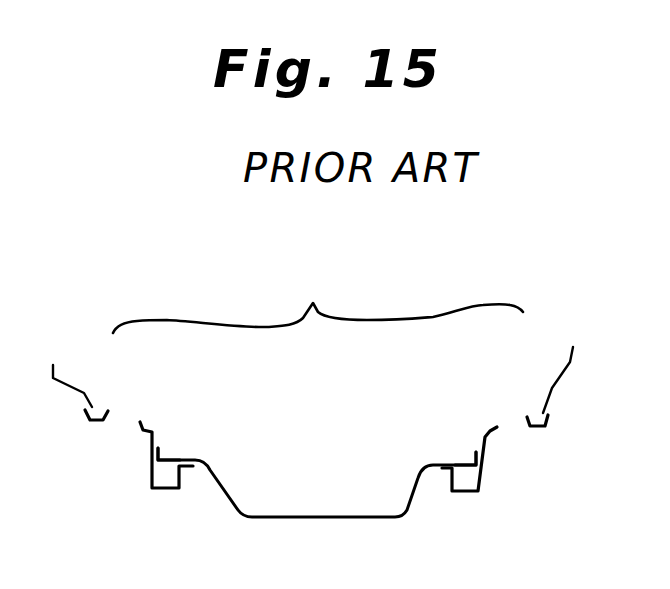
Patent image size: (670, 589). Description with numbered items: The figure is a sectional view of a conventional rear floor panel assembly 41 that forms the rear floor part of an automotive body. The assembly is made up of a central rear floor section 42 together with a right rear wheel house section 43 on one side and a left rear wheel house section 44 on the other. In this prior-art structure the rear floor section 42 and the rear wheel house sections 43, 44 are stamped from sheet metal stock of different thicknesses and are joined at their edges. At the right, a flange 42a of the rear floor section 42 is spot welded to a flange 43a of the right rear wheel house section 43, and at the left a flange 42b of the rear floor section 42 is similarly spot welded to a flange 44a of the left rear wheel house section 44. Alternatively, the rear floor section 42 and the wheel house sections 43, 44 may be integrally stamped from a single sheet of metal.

The rear floor panel assembly 41 is at (318, 294).
The rear floor section 42 is at (313, 303).
The flange of the rear floor section 42a is at (168, 450).
The flange of the rear floor section 42b is at (463, 450).
The right rear wheel house section 43 is at (84, 393).
The left rear wheel house section 44 is at (550, 388).
The flange of the right rear wheel house section 43a is at (134, 469).
The flange of the left rear wheel house section 44a is at (500, 458).